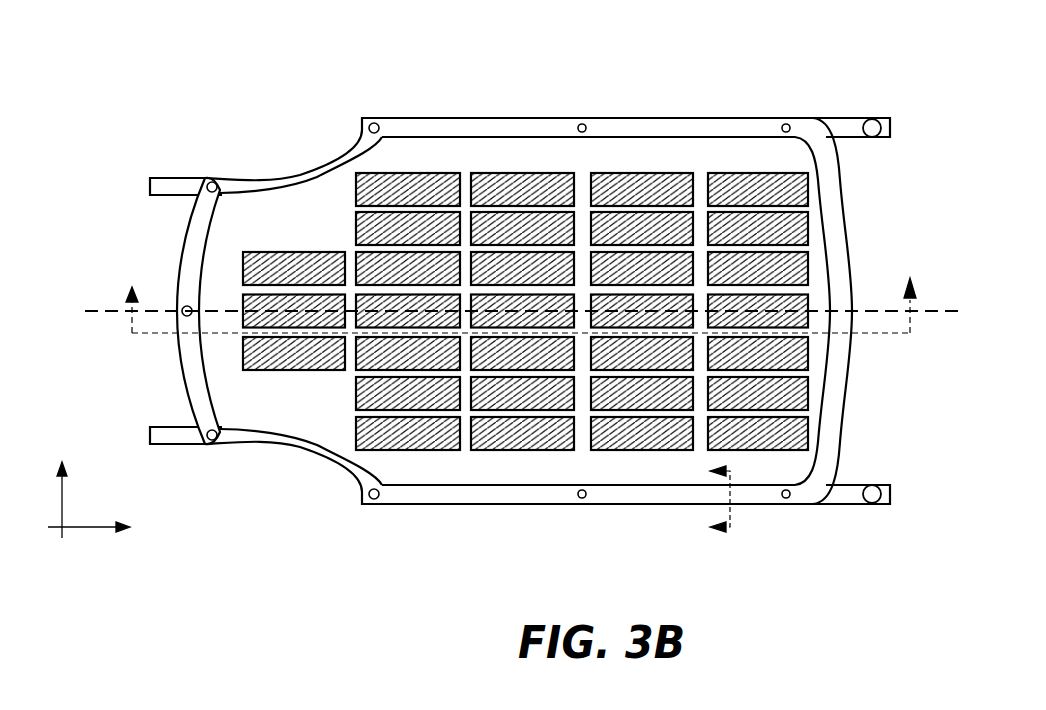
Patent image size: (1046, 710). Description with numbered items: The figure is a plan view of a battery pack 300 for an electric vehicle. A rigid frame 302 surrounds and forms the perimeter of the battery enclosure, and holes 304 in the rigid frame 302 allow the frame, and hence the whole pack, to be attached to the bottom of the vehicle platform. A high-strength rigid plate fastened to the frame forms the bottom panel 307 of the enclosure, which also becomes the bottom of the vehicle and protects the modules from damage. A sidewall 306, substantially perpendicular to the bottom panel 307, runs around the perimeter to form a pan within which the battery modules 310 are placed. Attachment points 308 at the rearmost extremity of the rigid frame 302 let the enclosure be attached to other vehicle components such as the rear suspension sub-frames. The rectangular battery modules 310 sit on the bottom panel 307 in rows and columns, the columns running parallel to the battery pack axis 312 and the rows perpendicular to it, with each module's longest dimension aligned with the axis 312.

The battery pack 300 is at (176, 70).
The rigid frame 302 is at (842, 130).
The holes 304 is at (585, 124).
The sidewall 306 is at (415, 137).
The bottom panel 307 is at (312, 402).
The attachment points 308 is at (877, 121).
The battery modules 310 is at (514, 171).
The battery pack axis 312 is at (120, 310).